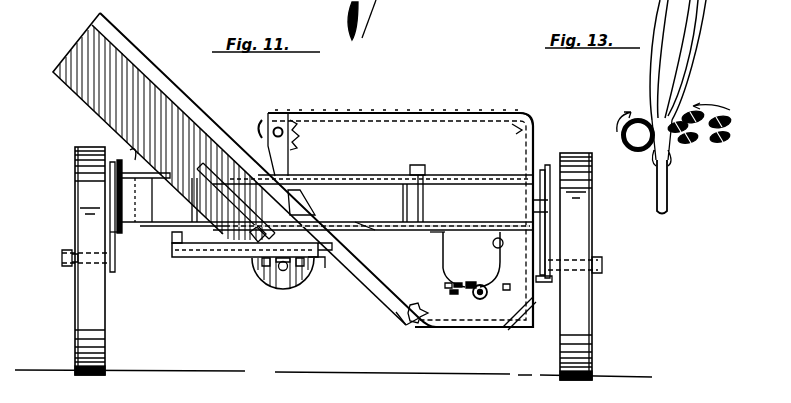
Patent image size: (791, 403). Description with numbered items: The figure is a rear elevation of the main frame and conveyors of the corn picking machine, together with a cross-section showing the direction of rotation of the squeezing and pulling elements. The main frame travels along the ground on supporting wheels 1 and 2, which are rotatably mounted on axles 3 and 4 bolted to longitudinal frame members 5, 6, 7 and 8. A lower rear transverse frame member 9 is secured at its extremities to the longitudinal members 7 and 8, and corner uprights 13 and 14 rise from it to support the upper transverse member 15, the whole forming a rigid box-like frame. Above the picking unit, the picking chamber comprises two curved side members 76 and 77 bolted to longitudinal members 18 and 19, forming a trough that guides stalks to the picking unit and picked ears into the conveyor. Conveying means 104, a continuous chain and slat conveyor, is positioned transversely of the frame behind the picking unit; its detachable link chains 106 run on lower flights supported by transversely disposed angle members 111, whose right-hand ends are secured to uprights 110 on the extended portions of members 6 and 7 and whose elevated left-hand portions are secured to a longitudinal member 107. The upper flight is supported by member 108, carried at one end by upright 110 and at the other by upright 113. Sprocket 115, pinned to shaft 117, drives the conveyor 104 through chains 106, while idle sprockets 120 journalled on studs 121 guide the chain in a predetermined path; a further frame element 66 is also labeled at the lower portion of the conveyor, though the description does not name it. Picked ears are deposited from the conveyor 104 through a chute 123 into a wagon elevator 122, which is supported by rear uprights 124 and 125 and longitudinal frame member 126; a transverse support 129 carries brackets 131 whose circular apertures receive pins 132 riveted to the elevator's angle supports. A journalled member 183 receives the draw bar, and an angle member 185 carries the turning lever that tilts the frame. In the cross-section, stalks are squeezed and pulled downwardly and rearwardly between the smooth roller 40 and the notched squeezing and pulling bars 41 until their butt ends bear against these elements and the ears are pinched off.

The supporting wheel 1 is at (578, 382).
The supporting wheel 2 is at (94, 376).
The axle 3 is at (549, 280).
The axle 4 is at (115, 262).
The longitudinal frame member 5 is at (134, 160).
The longitudinal frame member 6 is at (548, 170).
The longitudinal frame member 7 is at (545, 222).
The longitudinal frame member 8 is at (114, 238).
The lower rear transverse frame member 9 is at (367, 228).
The corner upright 13 is at (118, 203).
The corner upright 14 is at (540, 217).
The upper transverse member 15 is at (314, 177).
The longitudinal member 18 is at (444, 258).
The longitudinal member 19 is at (490, 259).
The smooth roller 40 is at (497, 288).
The squeezing and pulling bars 41 is at (466, 287).
The bottom frame bar 66 is at (461, 342).
The curved side member 76 is at (450, 282).
The curved side member 77 is at (516, 275).
The conveying means 104 is at (412, 108).
The detachable link chain 106 is at (487, 108).
The longitudinal member 107 is at (312, 255).
The upper flight support member 108 is at (328, 111).
The upright 110 is at (526, 204).
The transversely disposed angle member 111 is at (398, 318).
The upright 113 is at (268, 146).
The sprocket 115 is at (298, 136).
The shaft 117 is at (262, 126).
The idle sprocket 120 is at (518, 130).
The stud 121 is at (525, 122).
The wagon elevator 122 is at (128, 72).
The chute 123 is at (296, 200).
The rear upright 124 is at (194, 280).
The rear upright 125 is at (306, 288).
The longitudinal frame member 126 is at (172, 250).
The transverse support 129 is at (260, 270).
The bracket 131 is at (282, 290).
The pin 132 is at (290, 272).
The journalled member 183 is at (402, 177).
The angle member 185 is at (421, 166).